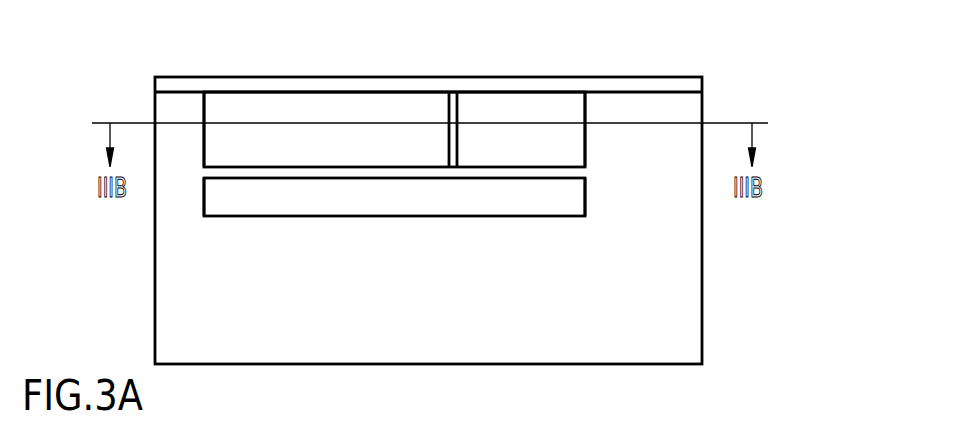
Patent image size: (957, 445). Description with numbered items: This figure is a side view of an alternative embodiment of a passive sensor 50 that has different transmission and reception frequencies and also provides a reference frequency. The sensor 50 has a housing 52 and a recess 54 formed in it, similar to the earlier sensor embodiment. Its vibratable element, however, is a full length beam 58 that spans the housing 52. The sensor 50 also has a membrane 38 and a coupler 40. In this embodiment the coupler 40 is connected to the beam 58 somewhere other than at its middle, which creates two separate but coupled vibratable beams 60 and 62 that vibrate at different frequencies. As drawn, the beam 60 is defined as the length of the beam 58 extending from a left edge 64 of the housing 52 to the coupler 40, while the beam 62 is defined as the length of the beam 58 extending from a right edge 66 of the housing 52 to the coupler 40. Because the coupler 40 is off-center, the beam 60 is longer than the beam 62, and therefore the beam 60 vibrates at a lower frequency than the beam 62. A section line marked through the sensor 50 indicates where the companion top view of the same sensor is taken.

The membrane 38 is at (683, 85).
The coupler 40 is at (445, 108).
The sensor 50 is at (772, 332).
The housing 52 is at (525, 315).
The recess 54 is at (340, 190).
The full length beam 58 is at (313, 167).
The beam 60 is at (240, 173).
The beam 62 is at (545, 173).
The left edge 64 is at (208, 107).
The right edge 66 is at (583, 107).